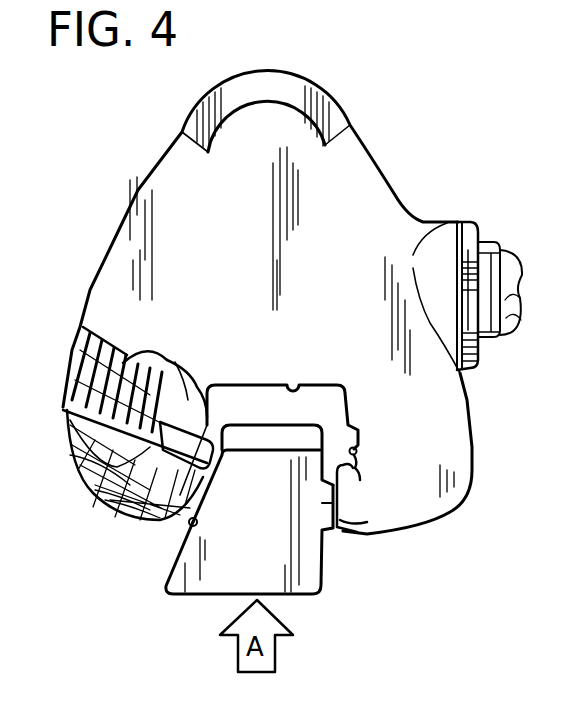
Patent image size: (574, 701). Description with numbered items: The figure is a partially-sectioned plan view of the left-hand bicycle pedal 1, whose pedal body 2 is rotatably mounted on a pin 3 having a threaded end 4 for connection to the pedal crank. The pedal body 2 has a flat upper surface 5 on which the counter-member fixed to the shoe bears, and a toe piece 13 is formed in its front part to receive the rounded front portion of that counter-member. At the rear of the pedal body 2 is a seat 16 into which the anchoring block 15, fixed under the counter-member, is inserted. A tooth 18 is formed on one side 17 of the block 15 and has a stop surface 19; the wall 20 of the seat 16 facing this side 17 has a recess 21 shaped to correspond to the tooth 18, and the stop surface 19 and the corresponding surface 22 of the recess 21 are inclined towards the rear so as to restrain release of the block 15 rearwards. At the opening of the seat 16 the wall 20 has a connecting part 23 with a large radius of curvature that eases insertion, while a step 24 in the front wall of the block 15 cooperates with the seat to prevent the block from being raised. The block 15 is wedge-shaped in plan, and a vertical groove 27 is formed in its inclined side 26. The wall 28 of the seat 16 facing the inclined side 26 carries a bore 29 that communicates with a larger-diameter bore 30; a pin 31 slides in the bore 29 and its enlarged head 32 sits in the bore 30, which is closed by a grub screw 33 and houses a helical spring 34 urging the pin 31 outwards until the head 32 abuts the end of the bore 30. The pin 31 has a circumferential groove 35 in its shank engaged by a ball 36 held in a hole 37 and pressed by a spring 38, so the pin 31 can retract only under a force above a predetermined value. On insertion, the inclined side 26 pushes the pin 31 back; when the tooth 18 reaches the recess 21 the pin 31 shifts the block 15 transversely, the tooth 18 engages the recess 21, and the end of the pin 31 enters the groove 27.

The left-hand bicycle pedal 1 is at (391, 140).
The pedal body 2 is at (138, 190).
The pin 3 is at (490, 236).
The threaded end 4 is at (500, 252).
The flat upper surface 5 is at (375, 218).
The toe piece 13 is at (305, 97).
The anchoring block 15 is at (163, 577).
The seat 16 is at (305, 386).
The side of the block 17 is at (322, 562).
The tooth 18 is at (343, 510).
The stop surface 19 is at (330, 530).
The wall of the seat 20 is at (352, 425).
The recess 21 is at (357, 452).
The corresponding surface of the recess 22 is at (362, 465).
The connecting part 23 is at (368, 532).
The step 24 is at (253, 435).
The inclined side 26 is at (178, 550).
The groove 27 is at (200, 514).
The wall of the seat 28 is at (200, 506).
The bore 29 is at (135, 508).
The larger-diameter bore 30 is at (70, 440).
The pin 31 is at (207, 385).
The enlarged head 32 is at (156, 355).
The grub screw 33 is at (116, 350).
The helical spring 34 is at (142, 355).
The circumferential groove 35 is at (175, 362).
The ball 36 is at (88, 483).
The hole 37 is at (115, 505).
The spring 38 is at (110, 493).